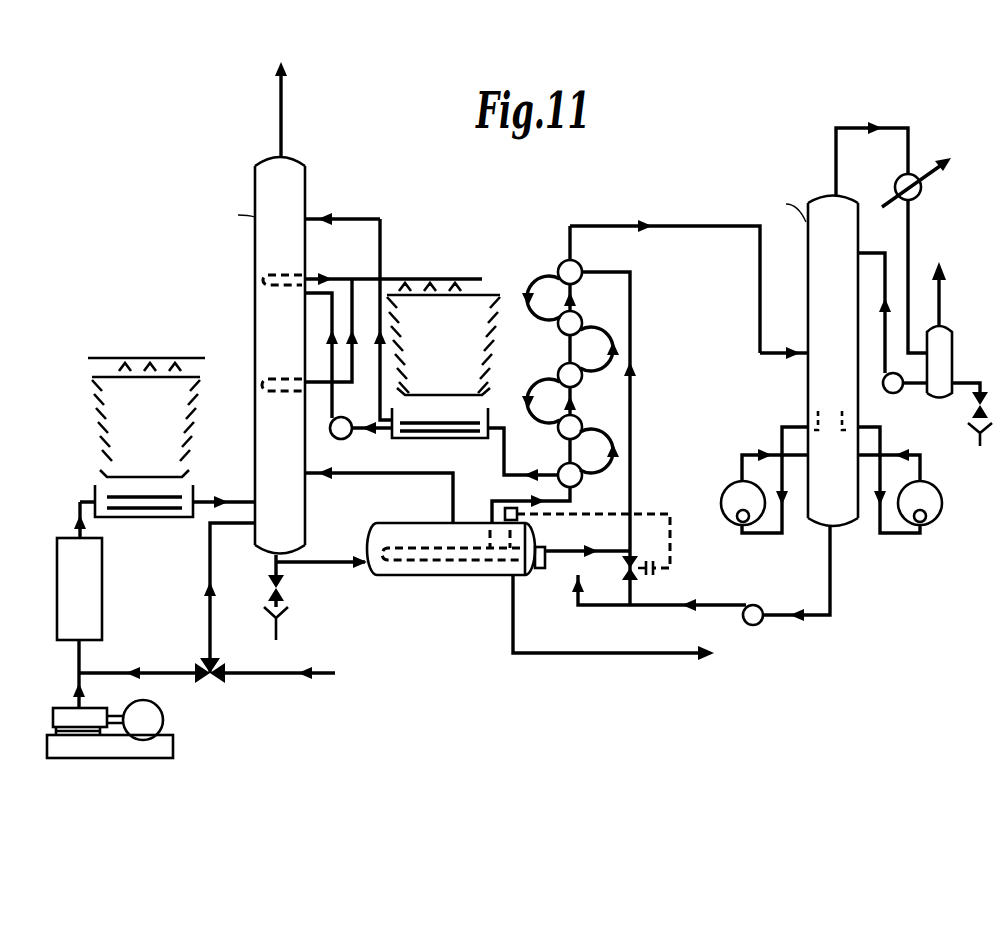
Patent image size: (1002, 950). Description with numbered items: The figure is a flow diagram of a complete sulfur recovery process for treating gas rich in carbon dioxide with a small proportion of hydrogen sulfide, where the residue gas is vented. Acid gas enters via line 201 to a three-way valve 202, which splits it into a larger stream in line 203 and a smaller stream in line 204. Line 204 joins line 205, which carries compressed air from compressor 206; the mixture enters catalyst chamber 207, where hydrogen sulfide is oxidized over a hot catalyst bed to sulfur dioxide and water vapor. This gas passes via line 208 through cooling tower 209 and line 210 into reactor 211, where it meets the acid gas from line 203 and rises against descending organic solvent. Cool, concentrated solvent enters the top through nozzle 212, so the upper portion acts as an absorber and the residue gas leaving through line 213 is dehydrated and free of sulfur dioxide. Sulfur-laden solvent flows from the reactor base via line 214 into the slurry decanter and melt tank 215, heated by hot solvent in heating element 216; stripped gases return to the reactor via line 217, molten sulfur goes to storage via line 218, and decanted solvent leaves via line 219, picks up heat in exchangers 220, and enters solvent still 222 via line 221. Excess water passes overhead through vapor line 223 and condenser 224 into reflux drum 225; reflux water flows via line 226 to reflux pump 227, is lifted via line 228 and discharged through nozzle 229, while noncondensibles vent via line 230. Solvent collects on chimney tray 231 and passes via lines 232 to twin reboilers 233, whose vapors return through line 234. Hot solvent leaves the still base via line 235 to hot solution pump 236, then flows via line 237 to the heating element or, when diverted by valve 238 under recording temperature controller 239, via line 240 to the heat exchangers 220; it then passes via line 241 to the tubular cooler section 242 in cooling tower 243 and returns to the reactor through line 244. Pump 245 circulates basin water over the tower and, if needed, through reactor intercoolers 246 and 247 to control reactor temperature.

The line 201 is at (333, 672).
The three-way valve 202 is at (206, 681).
The line 203 is at (208, 636).
The line 204 is at (158, 672).
The line 205 is at (78, 676).
The compressor 206 is at (54, 716).
The catalyst chamber 207 is at (104, 586).
The line 208 is at (78, 513).
The cooling tower 209 is at (160, 454).
The line 210 is at (244, 498).
The reactor 211 is at (255, 272).
The nozzle 212 is at (310, 214).
The line 213 is at (283, 130).
The line 214 is at (328, 563).
The slurry decanter and melt tank 215 is at (372, 547).
The heating element 216 is at (428, 548).
The line 217 is at (406, 480).
The line 218 is at (630, 651).
The line 219 is at (516, 498).
The heat exchangers 220 is at (582, 318).
The line 221 is at (758, 278).
The solvent still 222 is at (826, 376).
The vapor line 223 is at (930, 118).
The condenser 224 is at (916, 198).
The reflux drum 225 is at (954, 352).
The line 226 is at (915, 388).
The reflux pump 227 is at (915, 388).
The line 228 is at (878, 360).
The nozzle 229 is at (893, 248).
The line 230 is at (942, 316).
The chimney tray 231 is at (815, 423).
The lines 232 is at (741, 535).
The twin reboilers 233 is at (724, 494).
The line 234 is at (740, 462).
The line 235 is at (832, 614).
The hot solution pump 236 is at (750, 625).
The line 237 is at (748, 600).
The valve 238 is at (636, 576).
The recording temperature controller 239 is at (518, 522).
The line 240 is at (632, 346).
The line 241 is at (506, 450).
The tubular cooler section 242 is at (470, 410).
The cooling tower 243 is at (460, 370).
The line 244 is at (381, 247).
The pump 245 is at (340, 446).
The reactor intercooler 246 is at (262, 372).
The reactor intercooler 247 is at (290, 272).